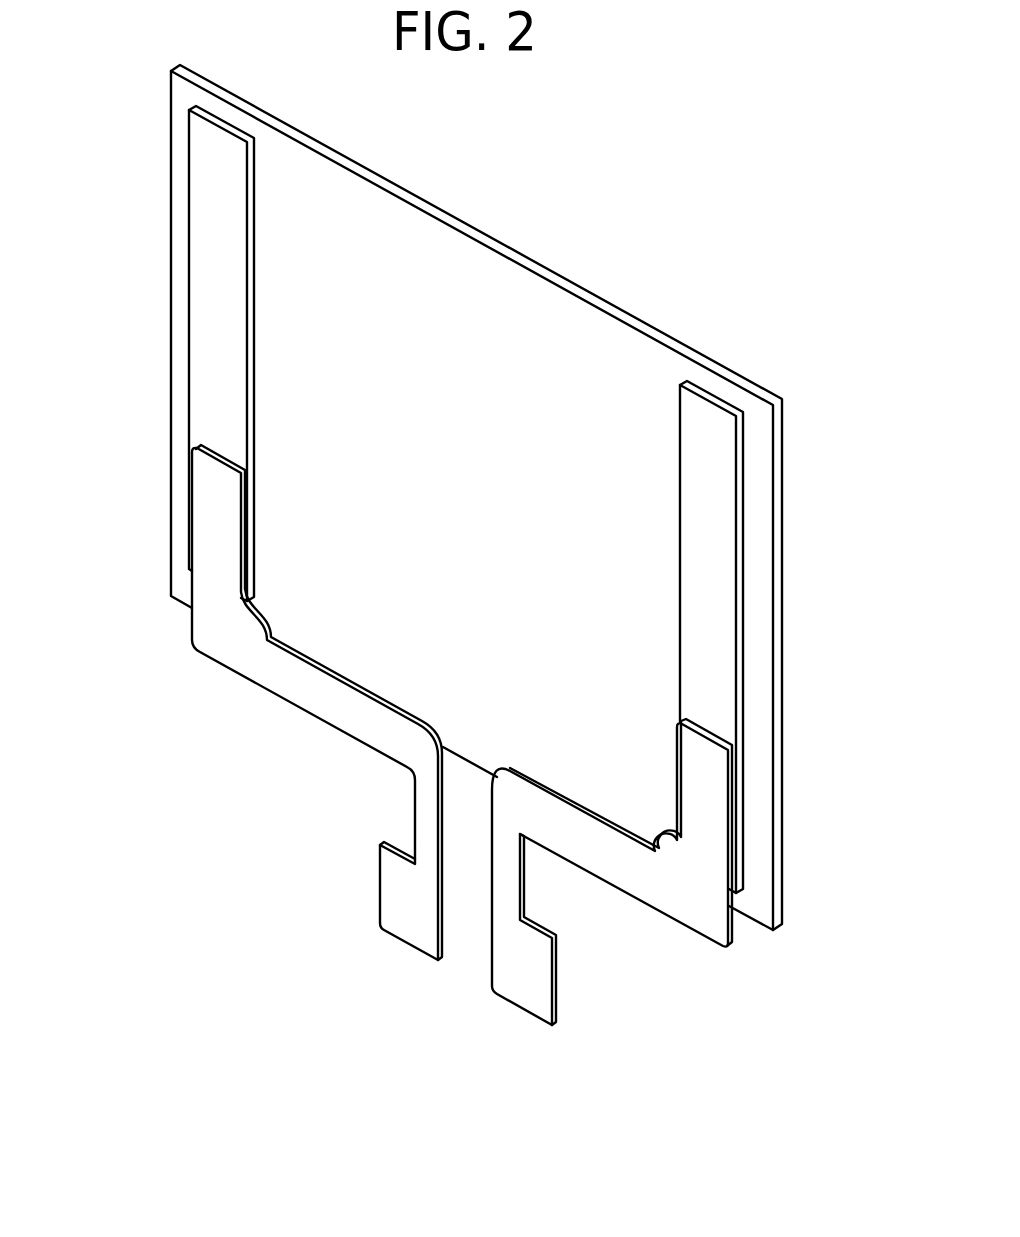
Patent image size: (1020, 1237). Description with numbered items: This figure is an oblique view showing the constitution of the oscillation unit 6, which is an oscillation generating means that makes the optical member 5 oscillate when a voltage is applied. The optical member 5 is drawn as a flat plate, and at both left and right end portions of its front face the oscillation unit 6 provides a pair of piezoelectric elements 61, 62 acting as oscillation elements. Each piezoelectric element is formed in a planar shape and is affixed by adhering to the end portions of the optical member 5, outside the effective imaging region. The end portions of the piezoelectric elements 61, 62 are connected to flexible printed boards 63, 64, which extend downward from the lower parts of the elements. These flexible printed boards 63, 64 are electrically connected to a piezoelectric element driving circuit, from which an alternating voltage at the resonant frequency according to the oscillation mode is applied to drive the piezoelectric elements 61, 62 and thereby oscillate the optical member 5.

The optical member 5 is at (515, 295).
The oscillation unit 6 is at (463, 596).
The piezoelectric element 61 is at (203, 227).
The piezoelectric element 62 is at (707, 585).
The flexible printed board 63 is at (400, 943).
The flexible printed board 64 is at (510, 1007).